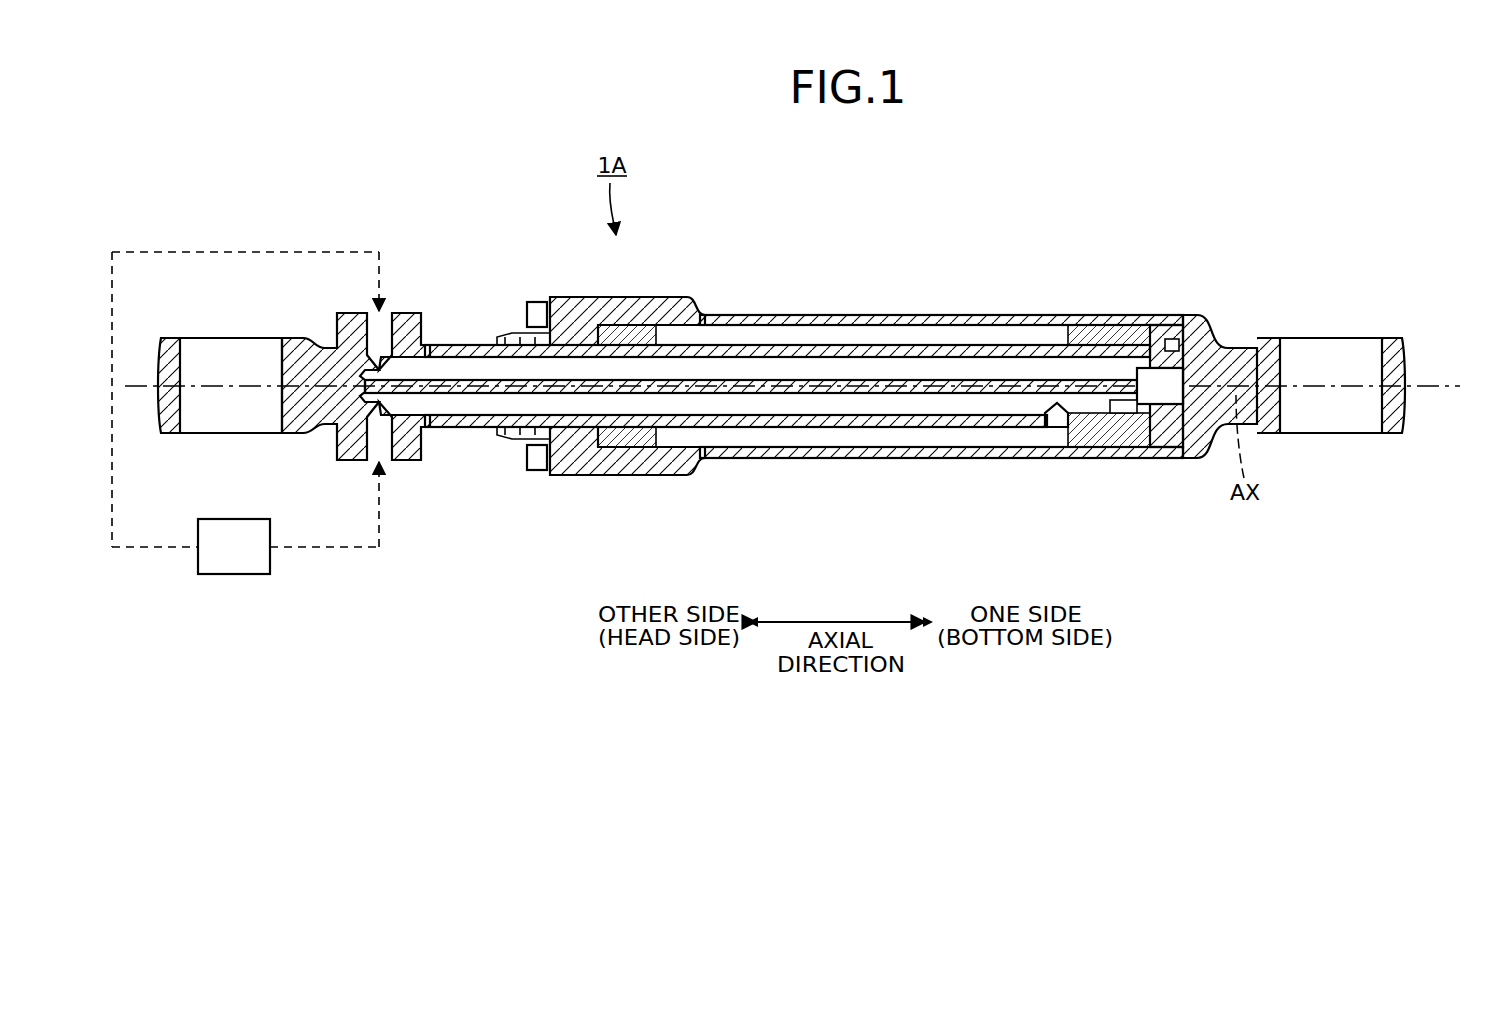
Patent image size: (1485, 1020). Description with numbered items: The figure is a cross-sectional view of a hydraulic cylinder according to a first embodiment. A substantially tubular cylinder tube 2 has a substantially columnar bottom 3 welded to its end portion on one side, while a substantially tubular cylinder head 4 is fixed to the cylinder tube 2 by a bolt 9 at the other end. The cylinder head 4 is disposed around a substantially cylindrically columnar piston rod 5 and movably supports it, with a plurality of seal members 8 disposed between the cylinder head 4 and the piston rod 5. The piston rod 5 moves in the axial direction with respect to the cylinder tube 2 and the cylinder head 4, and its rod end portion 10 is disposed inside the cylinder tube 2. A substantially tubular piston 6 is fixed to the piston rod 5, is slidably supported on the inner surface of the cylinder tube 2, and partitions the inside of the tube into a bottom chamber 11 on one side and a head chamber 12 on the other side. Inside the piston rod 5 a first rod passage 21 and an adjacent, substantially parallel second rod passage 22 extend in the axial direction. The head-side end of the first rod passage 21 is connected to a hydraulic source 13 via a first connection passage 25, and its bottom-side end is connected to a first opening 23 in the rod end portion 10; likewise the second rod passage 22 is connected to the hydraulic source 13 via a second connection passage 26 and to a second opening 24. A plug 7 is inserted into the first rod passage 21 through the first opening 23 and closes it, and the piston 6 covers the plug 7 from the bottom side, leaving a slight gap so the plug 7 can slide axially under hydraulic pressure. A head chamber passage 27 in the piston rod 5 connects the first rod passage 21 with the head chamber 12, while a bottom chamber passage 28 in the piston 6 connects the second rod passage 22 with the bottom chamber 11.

The cylinder tube 2 is at (843, 315).
The bottom 3 is at (1193, 315).
The cylinder head 4 is at (578, 297).
The piston rod 5 is at (777, 345).
The piston 6 is at (1133, 330).
The plug 7 is at (1145, 414).
The seal members 8 is at (510, 331).
The bolt 9 is at (537, 302).
The rod end portion 10 is at (1160, 418).
The bottom chamber 11 is at (1163, 330).
The head chamber 12 is at (1015, 437).
The hydraulic source 13 is at (250, 575).
The first rod passage 21 is at (890, 407).
The second rod passage 22 is at (909, 366).
The first opening 23 is at (1140, 412).
The second opening 24 is at (1113, 330).
The first connection passage 25 is at (381, 448).
The second connection passage 26 is at (384, 327).
The head chamber passage 27 is at (1060, 430).
The bottom chamber passage 28 is at (1170, 378).